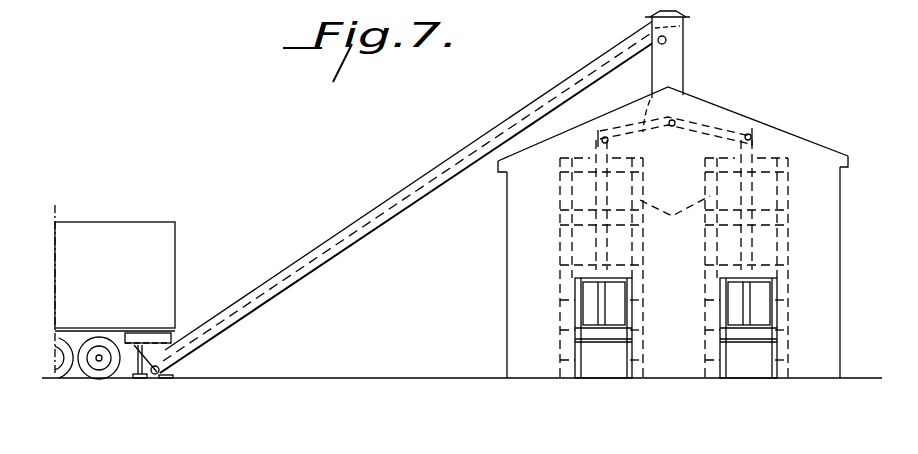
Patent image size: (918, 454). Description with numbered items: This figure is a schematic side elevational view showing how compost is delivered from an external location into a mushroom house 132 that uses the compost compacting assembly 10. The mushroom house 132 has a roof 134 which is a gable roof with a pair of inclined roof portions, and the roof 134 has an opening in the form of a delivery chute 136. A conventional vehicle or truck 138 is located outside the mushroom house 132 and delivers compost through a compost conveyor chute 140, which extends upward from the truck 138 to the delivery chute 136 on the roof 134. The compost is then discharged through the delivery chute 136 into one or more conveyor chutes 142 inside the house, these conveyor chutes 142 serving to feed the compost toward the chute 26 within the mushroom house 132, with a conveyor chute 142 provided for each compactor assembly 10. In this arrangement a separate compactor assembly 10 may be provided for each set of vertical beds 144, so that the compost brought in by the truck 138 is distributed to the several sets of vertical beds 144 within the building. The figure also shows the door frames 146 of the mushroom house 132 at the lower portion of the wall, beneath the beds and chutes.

The compactor assembly 10 is at (744, 365).
The chute 26 is at (640, 200).
The mushroom house 132 is at (521, 235).
The roof 134 is at (823, 117).
The delivery chute 136 is at (684, 58).
The truck 138 is at (155, 238).
The compost conveyor chute 140 is at (369, 221).
The conveyor chutes 142 is at (680, 100).
The vertical beds 144 is at (675, 225).
The door frames 146 is at (588, 379).